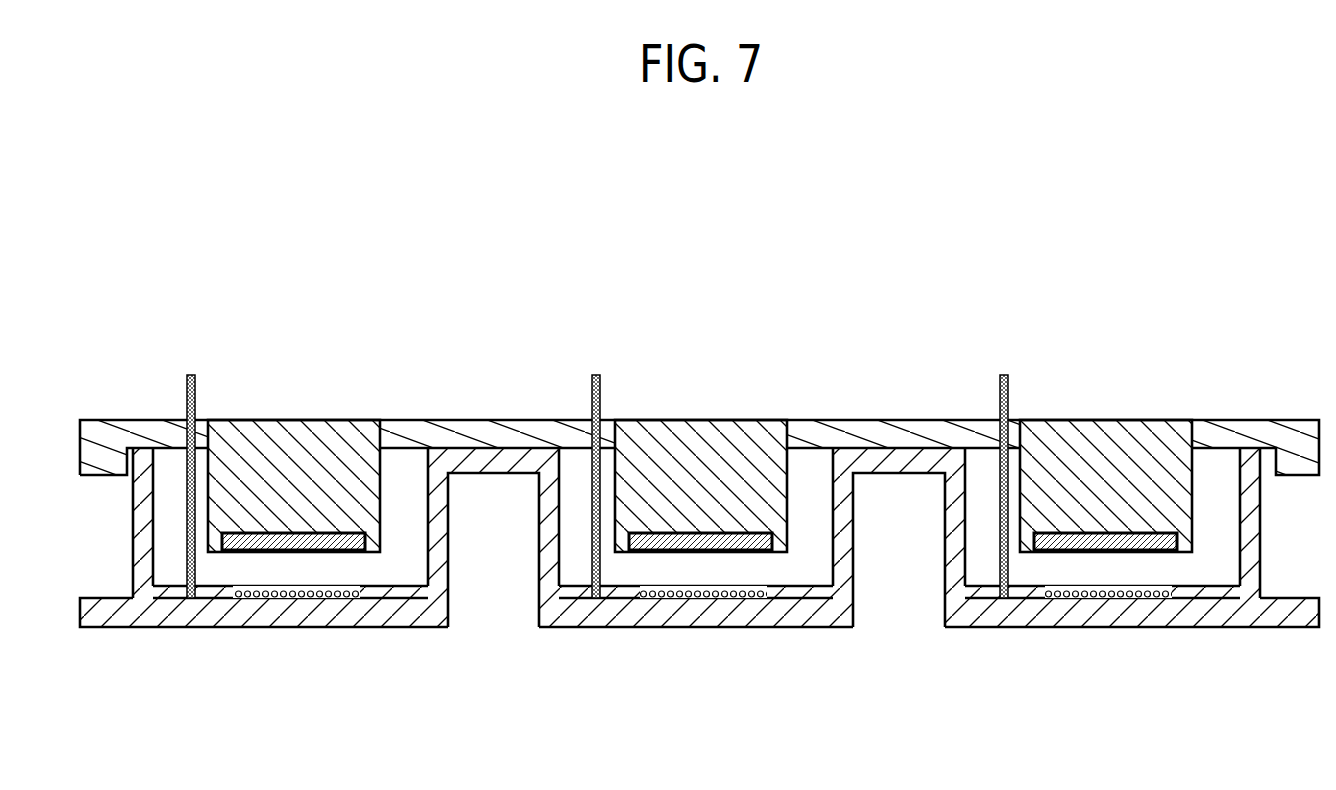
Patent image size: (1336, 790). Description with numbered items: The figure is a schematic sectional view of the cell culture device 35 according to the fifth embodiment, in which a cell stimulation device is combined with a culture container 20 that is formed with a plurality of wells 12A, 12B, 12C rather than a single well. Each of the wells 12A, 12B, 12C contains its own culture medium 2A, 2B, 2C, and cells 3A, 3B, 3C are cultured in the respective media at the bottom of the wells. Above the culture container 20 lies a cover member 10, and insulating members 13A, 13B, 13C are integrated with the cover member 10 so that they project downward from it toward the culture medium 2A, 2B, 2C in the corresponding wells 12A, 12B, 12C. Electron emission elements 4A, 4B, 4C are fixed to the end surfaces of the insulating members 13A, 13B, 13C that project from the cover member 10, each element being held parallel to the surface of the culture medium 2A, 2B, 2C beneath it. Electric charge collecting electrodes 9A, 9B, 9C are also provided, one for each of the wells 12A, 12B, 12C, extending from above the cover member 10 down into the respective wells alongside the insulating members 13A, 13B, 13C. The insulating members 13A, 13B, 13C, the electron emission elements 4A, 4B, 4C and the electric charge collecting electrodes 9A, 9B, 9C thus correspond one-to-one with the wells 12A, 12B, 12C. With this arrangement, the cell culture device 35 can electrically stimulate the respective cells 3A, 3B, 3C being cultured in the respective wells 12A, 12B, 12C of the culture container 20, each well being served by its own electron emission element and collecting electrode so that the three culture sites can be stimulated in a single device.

The cell culture device 35 is at (1213, 345).
The cover member 10 is at (142, 435).
The culture container 20 is at (572, 612).
The electric charge collecting electrode 9A is at (196, 381).
The electric charge collecting electrode 9B is at (601, 381).
The electric charge collecting electrode 9C is at (1009, 381).
The insulating member 13A is at (275, 478).
The insulating member 13B is at (682, 478).
The insulating member 13C is at (1087, 478).
The electron emission element 4A is at (318, 535).
The electron emission element 4B is at (725, 535).
The electron emission element 4C is at (1130, 535).
The cell 3A is at (300, 597).
The cell 3B is at (707, 597).
The cell 3C is at (1117, 597).
The culture medium 2A is at (385, 597).
The culture medium 2B is at (792, 597).
The culture medium 2C is at (1197, 597).
The well 12A is at (408, 565).
The well 12B is at (815, 565).
The well 12C is at (1222, 565).